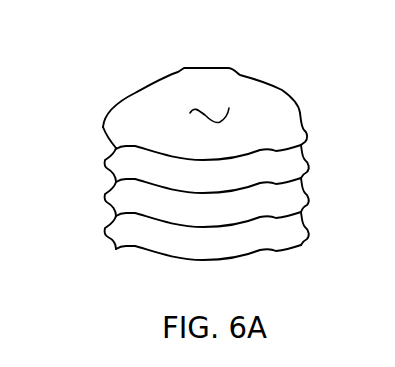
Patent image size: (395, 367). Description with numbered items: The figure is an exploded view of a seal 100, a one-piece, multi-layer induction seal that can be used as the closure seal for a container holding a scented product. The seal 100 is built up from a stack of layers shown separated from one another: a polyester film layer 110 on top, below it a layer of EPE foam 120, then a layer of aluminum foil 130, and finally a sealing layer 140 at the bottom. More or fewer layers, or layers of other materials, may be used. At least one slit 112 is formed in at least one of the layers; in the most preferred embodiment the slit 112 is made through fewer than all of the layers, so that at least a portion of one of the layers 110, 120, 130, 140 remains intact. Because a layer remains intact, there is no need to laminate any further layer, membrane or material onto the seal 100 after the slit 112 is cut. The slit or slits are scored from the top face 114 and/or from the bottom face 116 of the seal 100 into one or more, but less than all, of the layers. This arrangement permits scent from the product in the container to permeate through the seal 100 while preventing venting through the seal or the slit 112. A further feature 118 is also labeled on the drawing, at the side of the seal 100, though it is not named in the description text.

The stacked assembly 100 is at (193, 161).
The first tier 110 is at (229, 157).
The second tier 120 is at (225, 192).
The third tier 130 is at (225, 223).
The fourth tier 140 is at (225, 258).
The top feature 112 is at (188, 117).
The right side tab 114 is at (268, 97).
The bottom feature 116 is at (167, 262).
The left side tab 118 is at (103, 129).